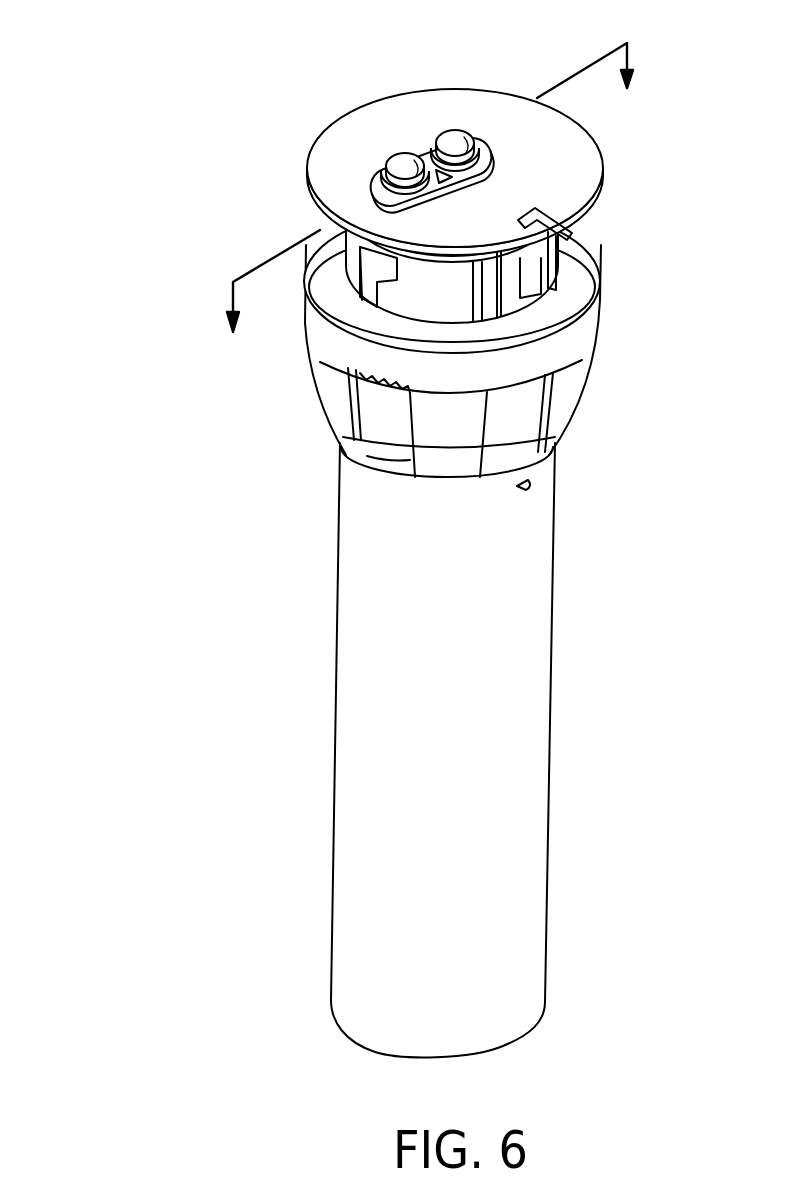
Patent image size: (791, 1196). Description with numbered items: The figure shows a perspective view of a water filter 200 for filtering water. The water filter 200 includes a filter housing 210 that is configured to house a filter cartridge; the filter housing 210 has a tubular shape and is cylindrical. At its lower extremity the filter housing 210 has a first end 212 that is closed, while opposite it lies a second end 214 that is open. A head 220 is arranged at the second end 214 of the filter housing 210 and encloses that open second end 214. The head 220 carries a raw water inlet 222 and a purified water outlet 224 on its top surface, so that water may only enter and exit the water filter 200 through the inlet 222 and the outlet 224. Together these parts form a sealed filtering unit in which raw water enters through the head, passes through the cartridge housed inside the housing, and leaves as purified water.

The water filter 200 is at (398, 537).
The filter housing 210 is at (505, 741).
The first end 212 is at (523, 1040).
The second end 214 is at (555, 470).
The head 220 is at (521, 247).
The raw water inlet 222 is at (405, 165).
The purified water outlet 224 is at (455, 141).